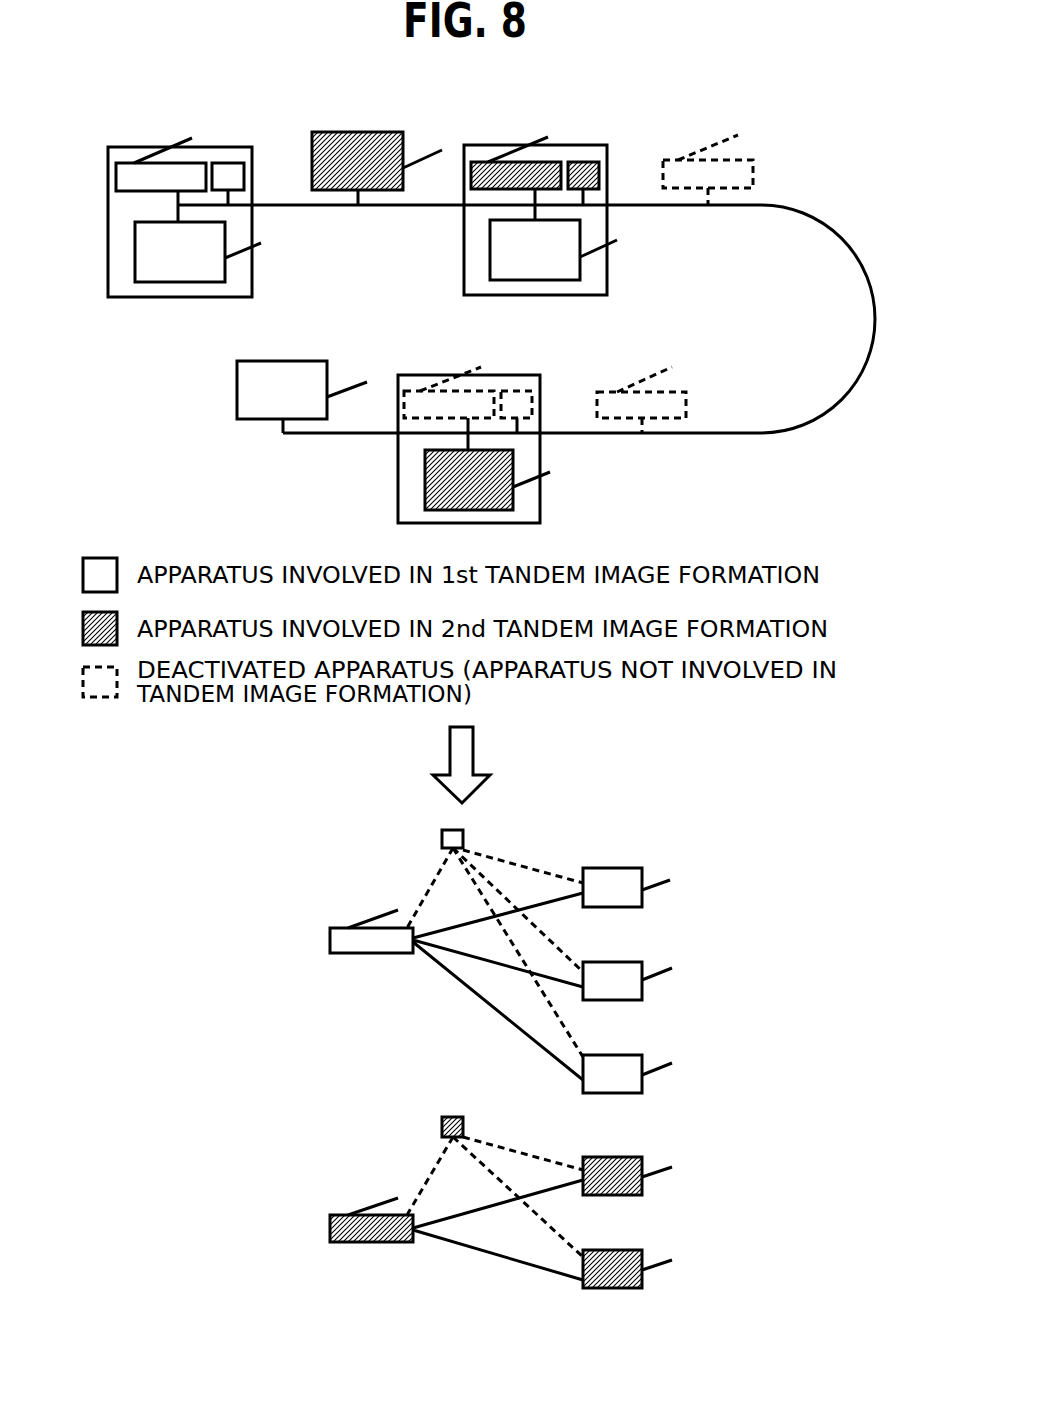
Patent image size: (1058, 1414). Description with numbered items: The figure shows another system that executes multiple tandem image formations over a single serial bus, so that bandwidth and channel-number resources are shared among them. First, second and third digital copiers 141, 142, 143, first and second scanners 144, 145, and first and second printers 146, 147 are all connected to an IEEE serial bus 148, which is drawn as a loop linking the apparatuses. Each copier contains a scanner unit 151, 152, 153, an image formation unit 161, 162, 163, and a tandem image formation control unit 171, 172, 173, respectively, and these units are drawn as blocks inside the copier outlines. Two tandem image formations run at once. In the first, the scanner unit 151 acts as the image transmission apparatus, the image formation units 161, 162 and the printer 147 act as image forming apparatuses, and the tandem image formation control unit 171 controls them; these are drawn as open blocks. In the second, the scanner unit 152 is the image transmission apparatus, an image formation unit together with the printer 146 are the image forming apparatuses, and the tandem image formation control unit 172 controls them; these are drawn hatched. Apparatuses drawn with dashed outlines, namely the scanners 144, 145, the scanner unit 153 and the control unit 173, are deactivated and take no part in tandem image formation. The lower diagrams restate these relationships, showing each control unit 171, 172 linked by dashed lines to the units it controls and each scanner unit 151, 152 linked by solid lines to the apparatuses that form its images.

The first digital copier 141 is at (224, 132).
The second digital copier 142 is at (580, 132).
The third digital copier 143 is at (513, 361).
The first scanner 144 is at (737, 160).
The second scanner 145 is at (670, 392).
The first printer 146 is at (358, 131).
The second printer 147 is at (283, 361).
The IEEE serial bus 148 is at (875, 314).
The scanner unit 151 is at (123, 163).
The scanner unit 152 is at (480, 162).
The scanner unit 153 is at (417, 393).
The image formation unit 161 is at (135, 252).
The image formation unit 162 is at (490, 254).
The image formation unit 163 is at (425, 482).
The tandem image formation control unit 171 is at (237, 160).
The tandem image formation control unit 172 is at (598, 159).
The tandem image formation control unit 173 is at (522, 390).